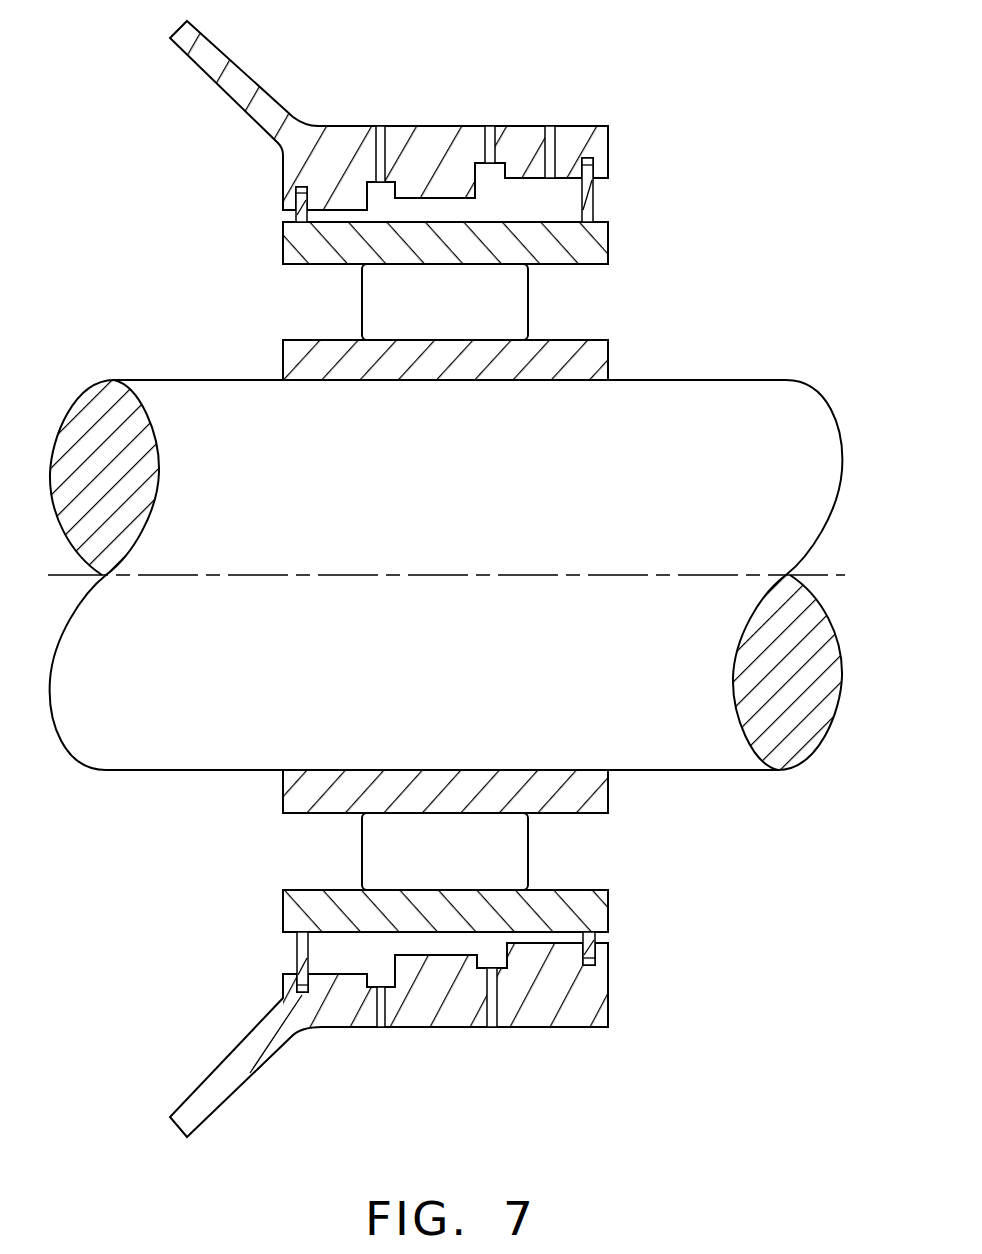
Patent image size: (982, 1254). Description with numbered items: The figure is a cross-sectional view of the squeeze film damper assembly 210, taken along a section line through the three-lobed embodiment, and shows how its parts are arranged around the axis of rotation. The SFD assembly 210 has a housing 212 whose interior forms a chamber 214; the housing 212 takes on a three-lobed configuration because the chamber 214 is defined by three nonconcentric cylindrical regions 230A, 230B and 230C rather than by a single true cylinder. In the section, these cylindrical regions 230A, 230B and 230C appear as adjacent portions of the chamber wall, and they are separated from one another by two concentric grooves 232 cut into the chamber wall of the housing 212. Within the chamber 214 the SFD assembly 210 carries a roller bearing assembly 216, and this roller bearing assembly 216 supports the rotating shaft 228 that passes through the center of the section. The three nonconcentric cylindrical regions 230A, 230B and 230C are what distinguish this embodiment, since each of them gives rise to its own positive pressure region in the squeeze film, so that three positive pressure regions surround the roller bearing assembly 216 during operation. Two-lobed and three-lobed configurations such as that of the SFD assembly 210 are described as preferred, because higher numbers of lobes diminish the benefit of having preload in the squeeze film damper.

The SFD assembly 210 is at (405, 579).
The housing 212 is at (353, 138).
The chamber 214 is at (496, 195).
The roller bearing assembly 216 is at (625, 233).
The rotating shaft 228 is at (752, 413).
The cylindrical region 230A is at (338, 210).
The cylindrical region 230B is at (418, 207).
The cylindrical region 230C is at (533, 178).
The concentric grooves 232 is at (490, 966).